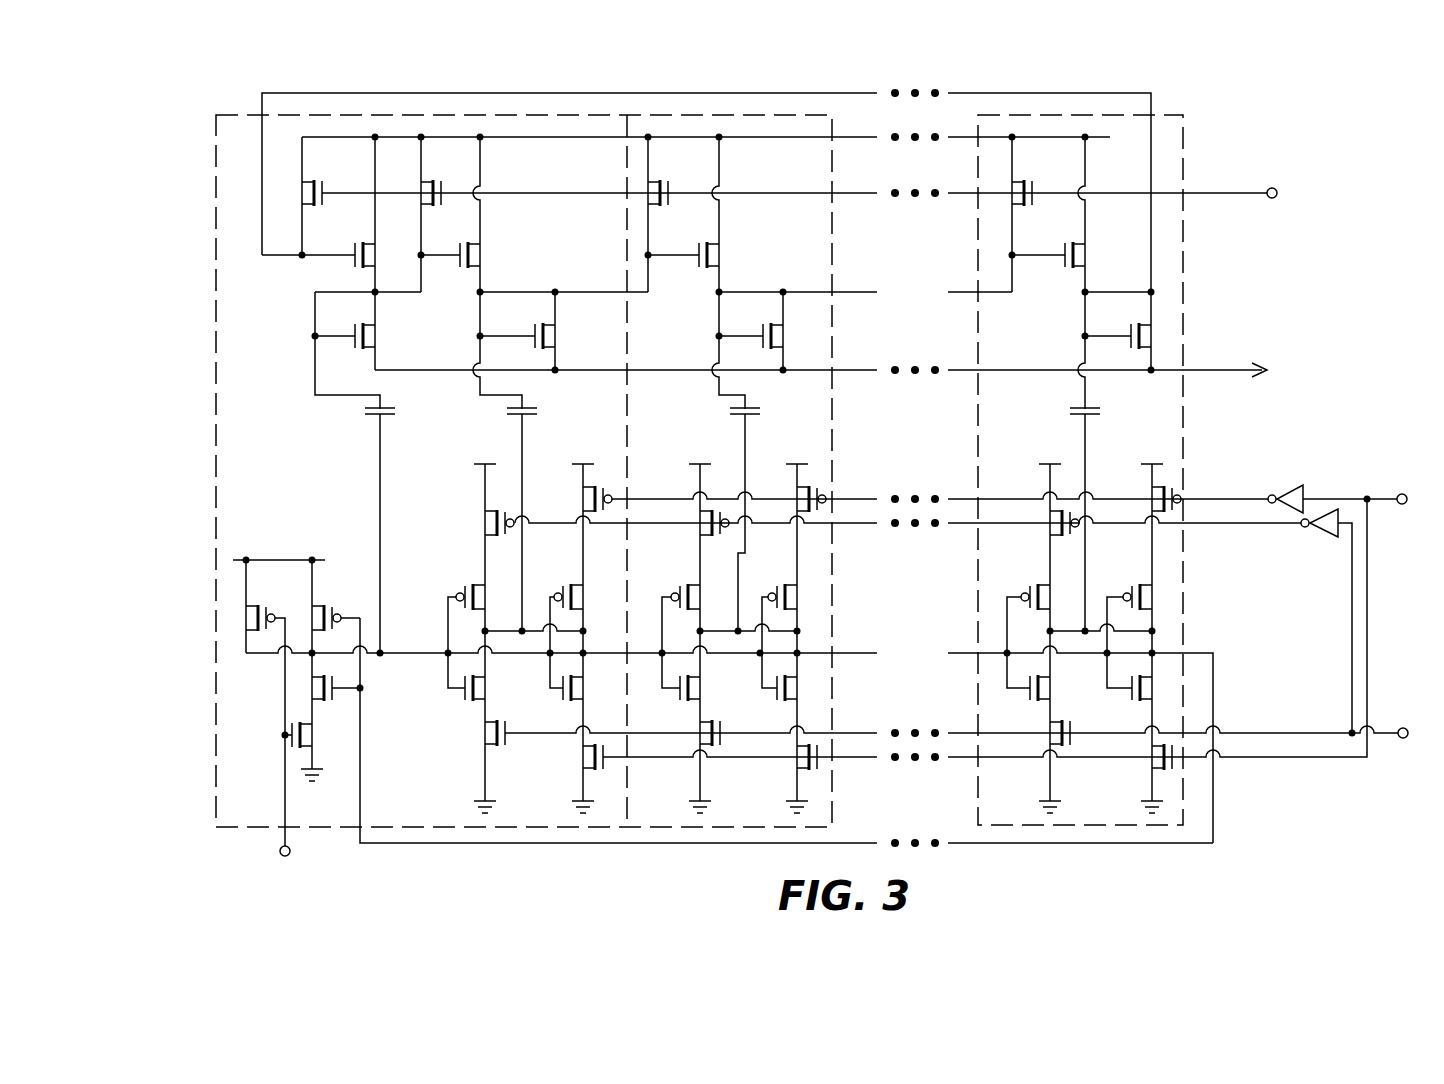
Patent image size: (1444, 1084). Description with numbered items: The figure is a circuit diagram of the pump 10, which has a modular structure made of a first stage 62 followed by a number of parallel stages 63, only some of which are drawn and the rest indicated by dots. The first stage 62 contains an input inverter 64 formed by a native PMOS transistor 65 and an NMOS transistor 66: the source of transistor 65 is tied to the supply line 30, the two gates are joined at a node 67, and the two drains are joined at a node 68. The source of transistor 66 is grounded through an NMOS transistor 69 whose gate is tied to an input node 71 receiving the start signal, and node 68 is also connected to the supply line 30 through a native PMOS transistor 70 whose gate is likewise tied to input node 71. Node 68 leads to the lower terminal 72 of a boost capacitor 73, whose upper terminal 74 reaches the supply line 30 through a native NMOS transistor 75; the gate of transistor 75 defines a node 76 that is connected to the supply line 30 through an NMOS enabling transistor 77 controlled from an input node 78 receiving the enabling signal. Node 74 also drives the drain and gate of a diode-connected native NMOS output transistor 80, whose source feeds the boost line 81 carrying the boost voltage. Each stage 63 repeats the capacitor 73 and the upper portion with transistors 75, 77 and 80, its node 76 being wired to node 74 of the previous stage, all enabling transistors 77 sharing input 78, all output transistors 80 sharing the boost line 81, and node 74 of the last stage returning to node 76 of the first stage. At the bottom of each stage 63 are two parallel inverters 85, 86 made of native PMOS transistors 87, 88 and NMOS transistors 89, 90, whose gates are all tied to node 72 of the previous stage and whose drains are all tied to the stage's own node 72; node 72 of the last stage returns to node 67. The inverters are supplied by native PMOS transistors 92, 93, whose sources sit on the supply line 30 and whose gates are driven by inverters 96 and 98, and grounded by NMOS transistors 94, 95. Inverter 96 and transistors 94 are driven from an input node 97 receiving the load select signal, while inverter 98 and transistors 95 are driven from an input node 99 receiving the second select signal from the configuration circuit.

The pump 10 is at (1258, 82).
The supply line 30 is at (312, 558).
The first stage 62 is at (225, 193).
The parallel stage 63 is at (545, 122).
The input inverter 64 is at (342, 550).
The PMOS transistor 65 is at (312, 612).
The NMOS transistor 66 is at (313, 683).
The node 67 is at (362, 690).
The node 68 is at (314, 655).
The NMOS transistor 69 is at (314, 738).
The PMOS transistor 70 is at (240, 618).
The input node 71 is at (280, 850).
The terminal of boost capacitor 72 is at (382, 650).
The boost capacitor 73 is at (396, 409).
The terminal of boost capacitor 74 is at (315, 338).
The native NMOS transistor 75 is at (366, 257).
The node 76 is at (302, 258).
The NMOS enabling transistor 77 is at (304, 192).
The input node 78 is at (1278, 212).
The native NMOS output transistor 80 is at (381, 342).
The boost line 81 is at (1228, 395).
The inverter 85 is at (487, 655).
The inverter 86 is at (597, 660).
The native PMOS transistor 87 is at (478, 598).
The native PMOS transistor 88 is at (578, 598).
The NMOS transistor 89 is at (492, 697).
The NMOS transistor 90 is at (586, 688).
The native PMOS transistor 92 is at (484, 528).
The native PMOS transistor 93 is at (586, 493).
The NMOS transistor 94 is at (482, 736).
The NMOS transistor 95 is at (585, 758).
The inverter 96 is at (1322, 538).
The input node 97 is at (1402, 757).
The inverter 98 is at (1290, 485).
The input node 99 is at (1400, 473).